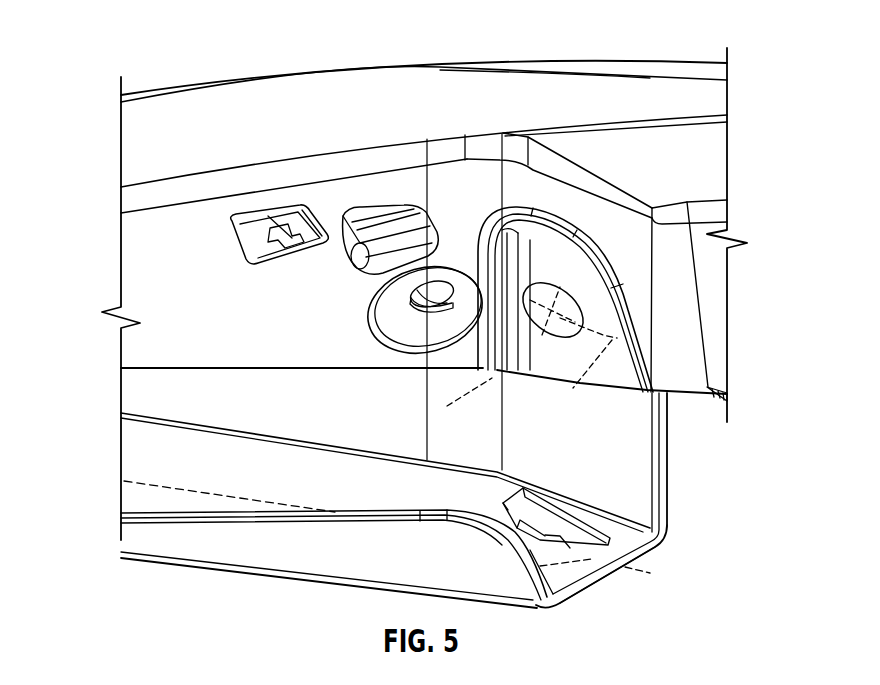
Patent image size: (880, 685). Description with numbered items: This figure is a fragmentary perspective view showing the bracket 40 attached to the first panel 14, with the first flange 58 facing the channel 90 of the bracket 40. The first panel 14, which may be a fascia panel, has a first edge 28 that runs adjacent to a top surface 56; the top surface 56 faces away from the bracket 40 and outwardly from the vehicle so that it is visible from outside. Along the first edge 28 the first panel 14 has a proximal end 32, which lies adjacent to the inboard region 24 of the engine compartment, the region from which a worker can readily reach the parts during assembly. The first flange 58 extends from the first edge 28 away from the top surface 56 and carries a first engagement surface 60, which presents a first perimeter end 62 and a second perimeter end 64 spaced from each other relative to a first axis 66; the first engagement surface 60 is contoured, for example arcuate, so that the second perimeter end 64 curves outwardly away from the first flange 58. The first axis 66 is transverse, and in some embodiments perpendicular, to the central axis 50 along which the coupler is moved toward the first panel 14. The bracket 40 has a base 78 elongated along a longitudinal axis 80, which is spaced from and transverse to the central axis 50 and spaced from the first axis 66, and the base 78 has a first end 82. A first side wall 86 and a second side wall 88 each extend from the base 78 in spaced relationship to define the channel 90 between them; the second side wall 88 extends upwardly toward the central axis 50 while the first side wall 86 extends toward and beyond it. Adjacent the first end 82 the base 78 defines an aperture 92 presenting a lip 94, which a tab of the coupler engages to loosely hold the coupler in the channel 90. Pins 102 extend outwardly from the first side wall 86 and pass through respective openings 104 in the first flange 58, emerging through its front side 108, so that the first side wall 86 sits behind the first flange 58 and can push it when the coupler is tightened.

The first panel 14 is at (715, 315).
The inboard region 24 is at (678, 556).
The first edge 28 is at (135, 186).
The proximal end 32 is at (668, 213).
The bracket 40 is at (560, 602).
The central axis 50 is at (465, 396).
The top surface 56 is at (578, 92).
The first flange 58 is at (143, 341).
The first engagement surface 60 is at (510, 268).
The first perimeter end 62 is at (630, 316).
The second perimeter end 64 is at (483, 257).
The first axis 66 is at (576, 372).
The base 78 is at (143, 493).
The longitudinal axis 80 is at (143, 480).
The first end 82 is at (613, 582).
The first side wall 86 is at (627, 420).
The second side wall 88 is at (363, 550).
The channel 90 is at (597, 522).
The aperture 92 is at (503, 507).
The lip 94 is at (545, 535).
The pins 102 is at (282, 223).
The openings 104 is at (248, 232).
The front side 108 is at (143, 262).